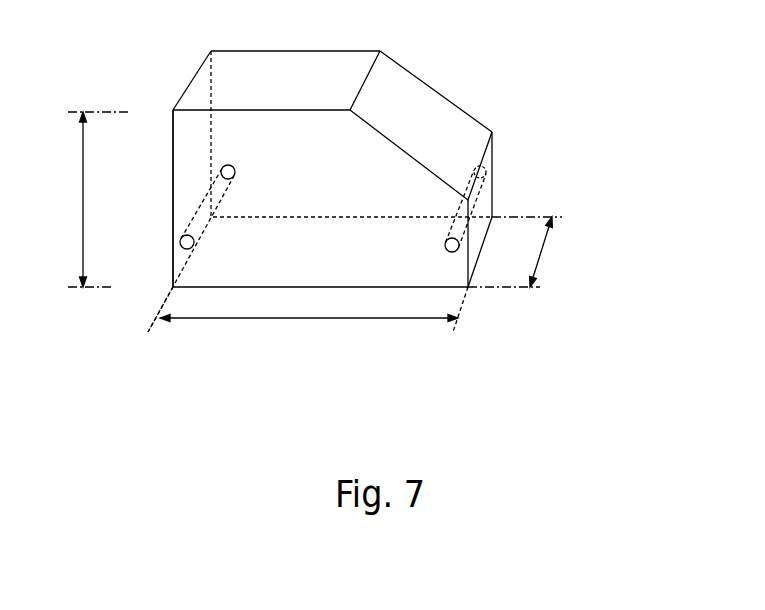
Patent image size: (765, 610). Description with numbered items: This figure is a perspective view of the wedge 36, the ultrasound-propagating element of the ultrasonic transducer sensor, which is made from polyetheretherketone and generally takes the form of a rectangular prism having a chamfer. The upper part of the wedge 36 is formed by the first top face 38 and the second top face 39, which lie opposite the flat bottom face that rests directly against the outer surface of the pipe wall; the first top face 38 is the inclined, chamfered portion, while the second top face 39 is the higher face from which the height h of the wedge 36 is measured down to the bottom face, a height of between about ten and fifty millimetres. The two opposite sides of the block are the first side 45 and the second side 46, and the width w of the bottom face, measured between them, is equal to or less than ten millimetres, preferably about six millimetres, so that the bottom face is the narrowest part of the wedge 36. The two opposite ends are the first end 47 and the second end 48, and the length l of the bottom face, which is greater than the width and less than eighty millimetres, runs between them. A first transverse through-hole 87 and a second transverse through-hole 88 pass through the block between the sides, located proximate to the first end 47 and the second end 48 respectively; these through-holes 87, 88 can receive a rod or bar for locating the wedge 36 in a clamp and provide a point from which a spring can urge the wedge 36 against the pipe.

The wedge 36 is at (501, 49).
The first top face 38 is at (400, 76).
The second top face 39 is at (193, 69).
The first side 45 is at (187, 179).
The second side 46 is at (238, 43).
The first end 47 is at (178, 128).
The second end 48 is at (503, 178).
The first transverse through-hole 87 is at (464, 198).
The second transverse through-hole 88 is at (235, 177).